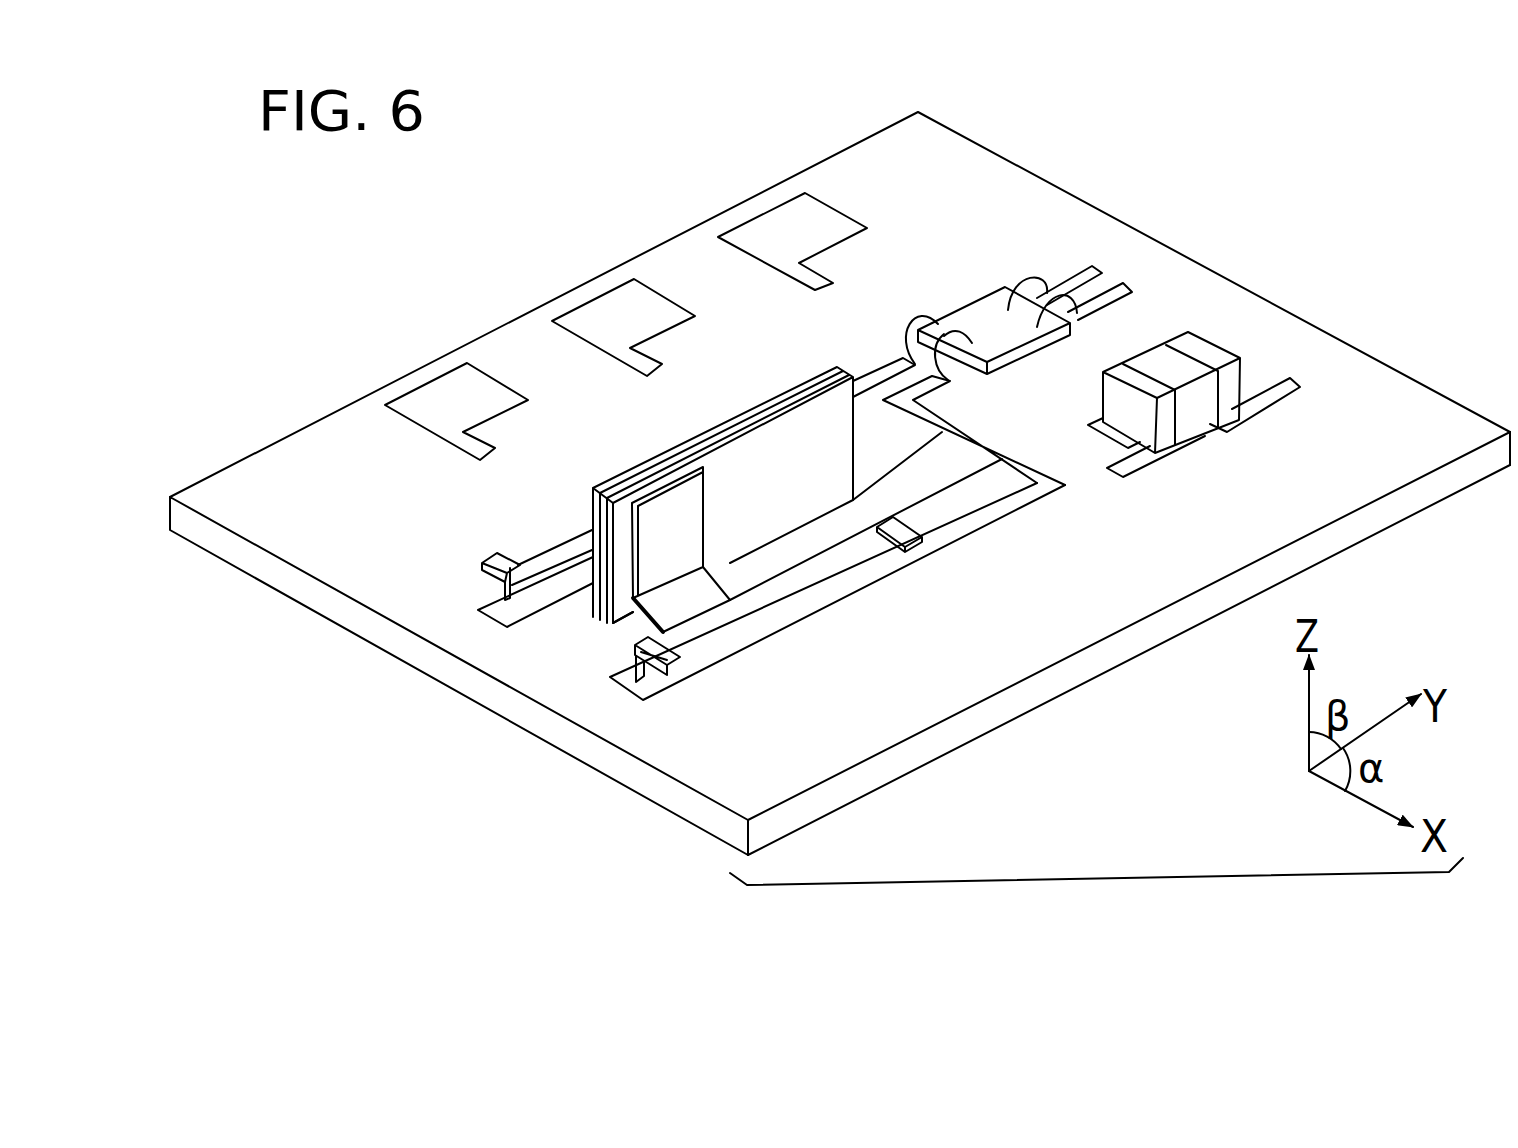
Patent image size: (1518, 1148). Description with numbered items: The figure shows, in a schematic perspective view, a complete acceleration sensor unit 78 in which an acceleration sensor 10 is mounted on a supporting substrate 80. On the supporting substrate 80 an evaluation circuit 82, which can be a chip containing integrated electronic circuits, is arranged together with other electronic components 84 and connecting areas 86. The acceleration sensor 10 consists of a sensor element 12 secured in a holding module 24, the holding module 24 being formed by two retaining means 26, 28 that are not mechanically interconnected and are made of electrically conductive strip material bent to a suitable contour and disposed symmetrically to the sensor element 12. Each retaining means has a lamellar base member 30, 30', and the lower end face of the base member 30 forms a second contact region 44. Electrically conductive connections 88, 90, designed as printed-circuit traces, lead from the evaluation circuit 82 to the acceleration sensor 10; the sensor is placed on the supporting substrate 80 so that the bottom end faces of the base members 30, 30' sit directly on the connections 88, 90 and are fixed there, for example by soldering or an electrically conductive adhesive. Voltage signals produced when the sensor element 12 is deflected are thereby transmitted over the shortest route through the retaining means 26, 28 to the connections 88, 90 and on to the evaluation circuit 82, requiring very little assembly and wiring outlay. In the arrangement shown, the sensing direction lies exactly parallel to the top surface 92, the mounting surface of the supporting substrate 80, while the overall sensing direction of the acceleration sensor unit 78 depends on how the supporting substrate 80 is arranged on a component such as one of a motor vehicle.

The acceleration sensor 10 is at (533, 645).
The sensor element 12 is at (618, 590).
The holding module 24 is at (600, 660).
The retaining means 26 is at (857, 545).
The retaining means 28 is at (585, 527).
The base member 30 is at (837, 591).
The base member 30' is at (504, 592).
The second contact region 44 is at (738, 625).
The acceleration sensor unit 78 is at (521, 308).
The supporting substrate 80 is at (1318, 522).
The evaluation circuit 82 is at (968, 318).
The other electronic components 84 is at (1230, 364).
The connecting areas 86 is at (760, 232).
The electrically conductive connection 88 is at (996, 512).
The electrically conductive connection 90 is at (880, 372).
The top surface 92 is at (1332, 484).